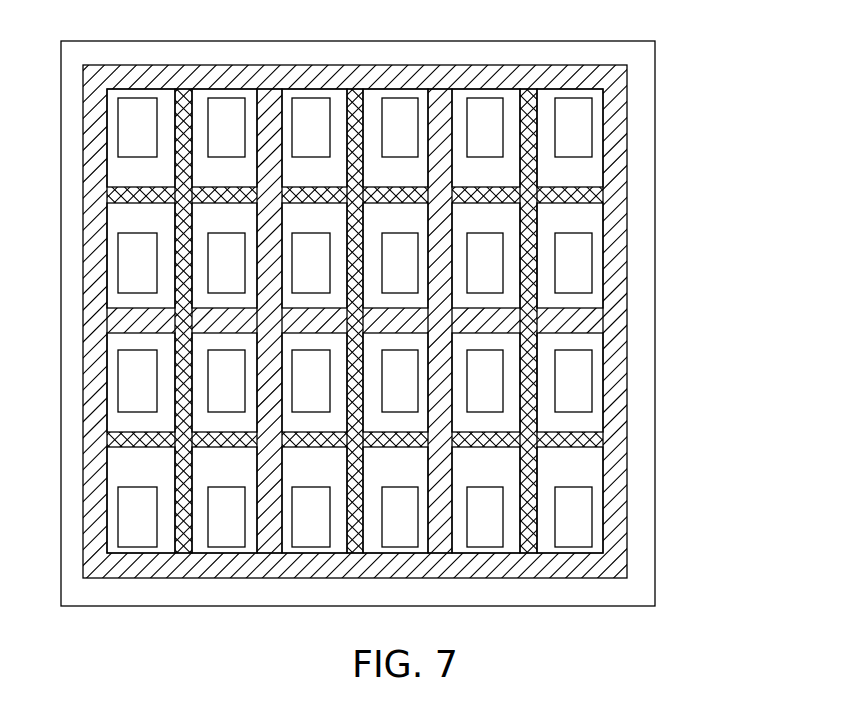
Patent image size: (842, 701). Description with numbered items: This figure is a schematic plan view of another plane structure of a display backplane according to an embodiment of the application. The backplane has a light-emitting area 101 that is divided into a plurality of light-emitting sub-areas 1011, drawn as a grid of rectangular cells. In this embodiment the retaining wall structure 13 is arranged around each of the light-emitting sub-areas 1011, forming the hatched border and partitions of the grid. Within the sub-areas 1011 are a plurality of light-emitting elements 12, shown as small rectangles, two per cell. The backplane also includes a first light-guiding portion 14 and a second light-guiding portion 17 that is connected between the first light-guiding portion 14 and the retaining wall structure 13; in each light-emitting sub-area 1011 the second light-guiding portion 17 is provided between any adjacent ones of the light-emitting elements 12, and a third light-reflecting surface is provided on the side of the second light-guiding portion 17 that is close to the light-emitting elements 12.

The light-emitting area 101 is at (645, 90).
The light-emitting sub-area 1011 is at (605, 127).
The first light-guiding portion 14 is at (557, 186).
The second light-guiding portion 17 is at (600, 192).
The light-emitting element 12 is at (573, 260).
The retaining wall structure 13 is at (610, 291).